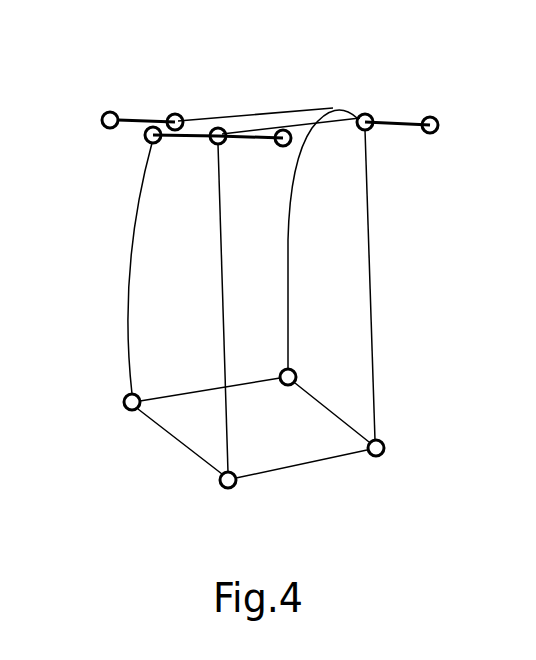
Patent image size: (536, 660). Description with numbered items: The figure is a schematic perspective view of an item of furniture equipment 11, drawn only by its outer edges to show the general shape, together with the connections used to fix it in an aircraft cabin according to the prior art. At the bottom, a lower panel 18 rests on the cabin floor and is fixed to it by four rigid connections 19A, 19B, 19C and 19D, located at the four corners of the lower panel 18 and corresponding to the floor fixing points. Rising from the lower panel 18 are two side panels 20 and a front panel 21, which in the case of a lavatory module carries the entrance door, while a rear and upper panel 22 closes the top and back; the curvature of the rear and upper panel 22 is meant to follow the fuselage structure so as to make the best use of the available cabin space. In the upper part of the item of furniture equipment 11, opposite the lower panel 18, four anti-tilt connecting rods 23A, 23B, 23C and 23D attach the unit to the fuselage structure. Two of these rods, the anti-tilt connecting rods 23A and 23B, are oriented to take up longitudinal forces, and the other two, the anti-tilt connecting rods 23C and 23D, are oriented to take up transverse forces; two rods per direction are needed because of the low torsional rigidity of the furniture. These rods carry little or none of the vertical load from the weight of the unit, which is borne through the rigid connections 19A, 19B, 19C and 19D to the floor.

The item of furniture equipment 11 is at (108, 248).
The lower panel 18 is at (288, 447).
The rigid connection 19A is at (295, 372).
The rigid connection 19B is at (386, 447).
The rigid connection 19C is at (220, 486).
The rigid connection 19D is at (123, 406).
The side panel 20 is at (147, 277).
The front panel 21 is at (338, 272).
The rear and upper panel 22 is at (262, 118).
The anti-tilt connecting rod 23A is at (193, 140).
The anti-tilt connecting rod 23B is at (135, 118).
The anti-tilt connecting rod 23C is at (267, 133).
The anti-tilt connecting rod 23D is at (398, 118).